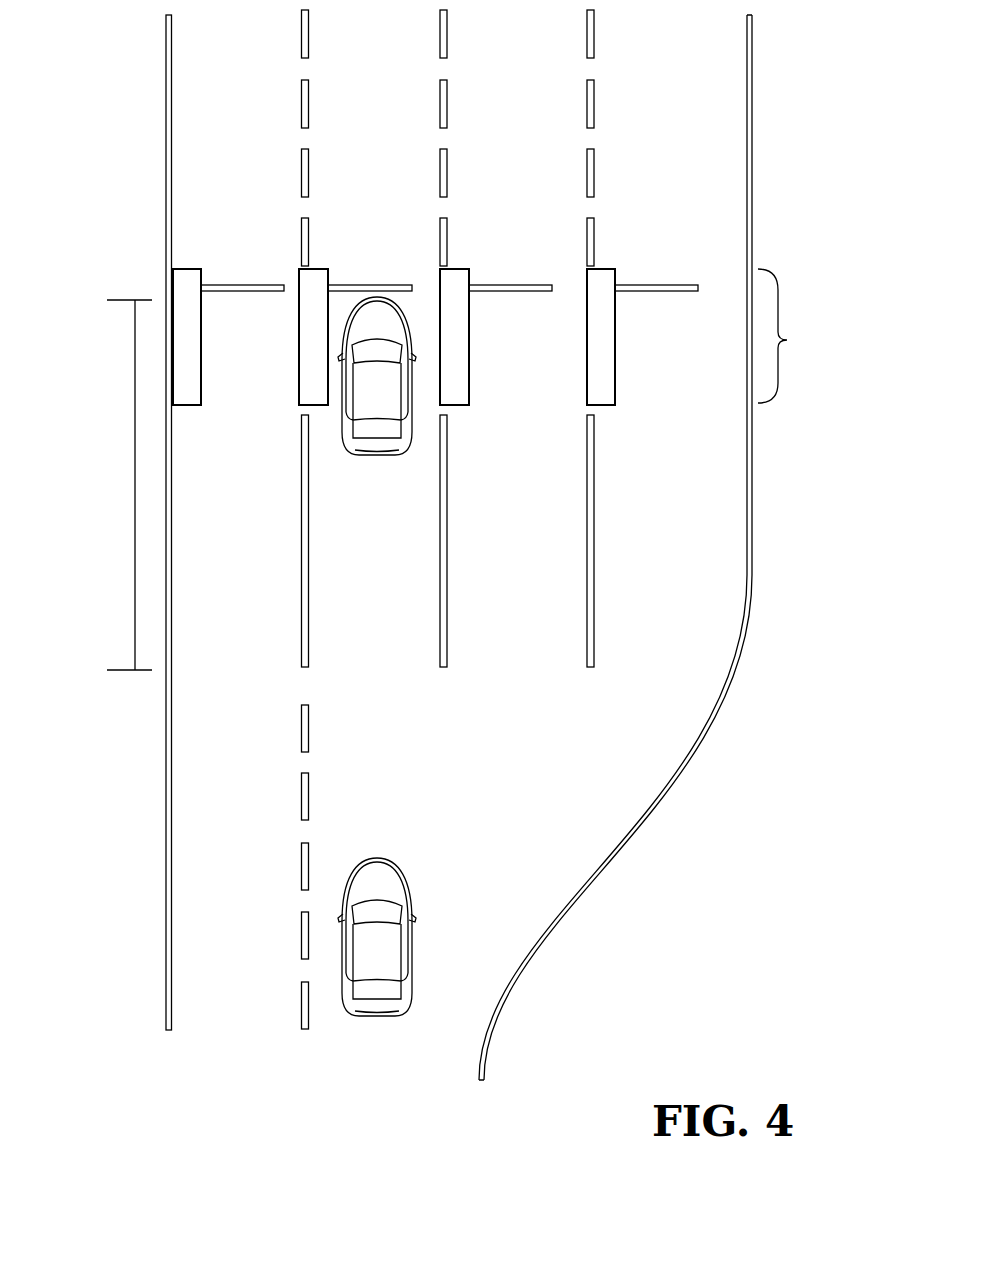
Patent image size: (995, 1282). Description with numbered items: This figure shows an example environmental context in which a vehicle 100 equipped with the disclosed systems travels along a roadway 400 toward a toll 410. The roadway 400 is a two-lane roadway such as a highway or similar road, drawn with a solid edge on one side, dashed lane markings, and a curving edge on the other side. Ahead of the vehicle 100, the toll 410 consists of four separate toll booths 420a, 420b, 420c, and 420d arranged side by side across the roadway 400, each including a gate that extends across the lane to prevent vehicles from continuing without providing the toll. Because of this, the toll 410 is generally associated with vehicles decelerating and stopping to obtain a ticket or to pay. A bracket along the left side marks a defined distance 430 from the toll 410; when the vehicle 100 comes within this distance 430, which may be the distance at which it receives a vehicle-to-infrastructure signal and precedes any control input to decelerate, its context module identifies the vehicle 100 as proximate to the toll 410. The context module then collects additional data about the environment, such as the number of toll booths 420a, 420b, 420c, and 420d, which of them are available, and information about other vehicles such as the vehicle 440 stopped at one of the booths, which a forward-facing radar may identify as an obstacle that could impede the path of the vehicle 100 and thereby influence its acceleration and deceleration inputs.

The roadway 400 is at (639, 885).
The toll 410 is at (794, 336).
The toll booth 420a is at (188, 268).
The toll booth 420b is at (322, 268).
The toll booth 420c is at (461, 268).
The toll booth 420d is at (605, 268).
The defined distance 430 is at (135, 472).
The vehicle 440 is at (375, 456).
The vehicle 100 is at (418, 940).